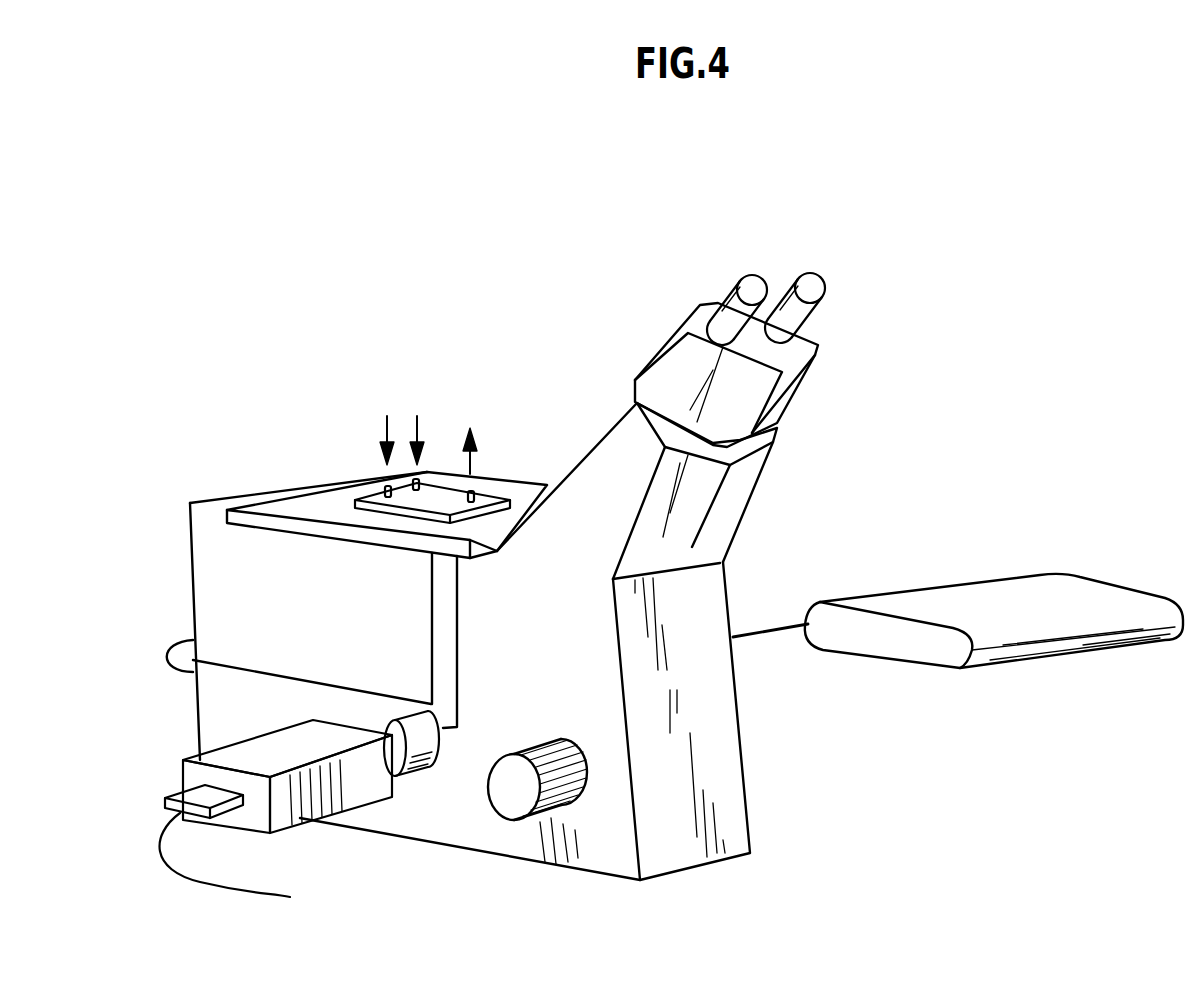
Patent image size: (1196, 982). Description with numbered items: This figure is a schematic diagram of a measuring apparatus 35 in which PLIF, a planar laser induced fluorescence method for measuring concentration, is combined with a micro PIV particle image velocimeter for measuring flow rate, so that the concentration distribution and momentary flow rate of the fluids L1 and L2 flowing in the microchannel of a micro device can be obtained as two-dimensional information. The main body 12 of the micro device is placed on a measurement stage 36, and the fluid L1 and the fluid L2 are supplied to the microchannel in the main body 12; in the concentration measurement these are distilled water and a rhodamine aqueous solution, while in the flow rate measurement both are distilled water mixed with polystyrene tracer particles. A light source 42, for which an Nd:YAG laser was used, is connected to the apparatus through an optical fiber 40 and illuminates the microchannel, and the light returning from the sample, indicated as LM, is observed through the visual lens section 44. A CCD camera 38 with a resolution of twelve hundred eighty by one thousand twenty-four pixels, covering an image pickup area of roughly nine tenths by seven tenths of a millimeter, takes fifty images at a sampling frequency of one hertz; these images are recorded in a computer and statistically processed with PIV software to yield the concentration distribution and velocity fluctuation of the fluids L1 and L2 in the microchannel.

The main body of a micro device 12 is at (353, 495).
The measuring apparatus 35 is at (913, 333).
The measurement stage 36 is at (258, 524).
The CCD camera 38 is at (241, 820).
The optical fiber 40 is at (767, 630).
The light source 42 is at (985, 592).
The visual lens section 44 is at (752, 285).
The fluid L1 is at (387, 418).
The fluid L2 is at (417, 432).
The reflected/observation light LM is at (473, 457).